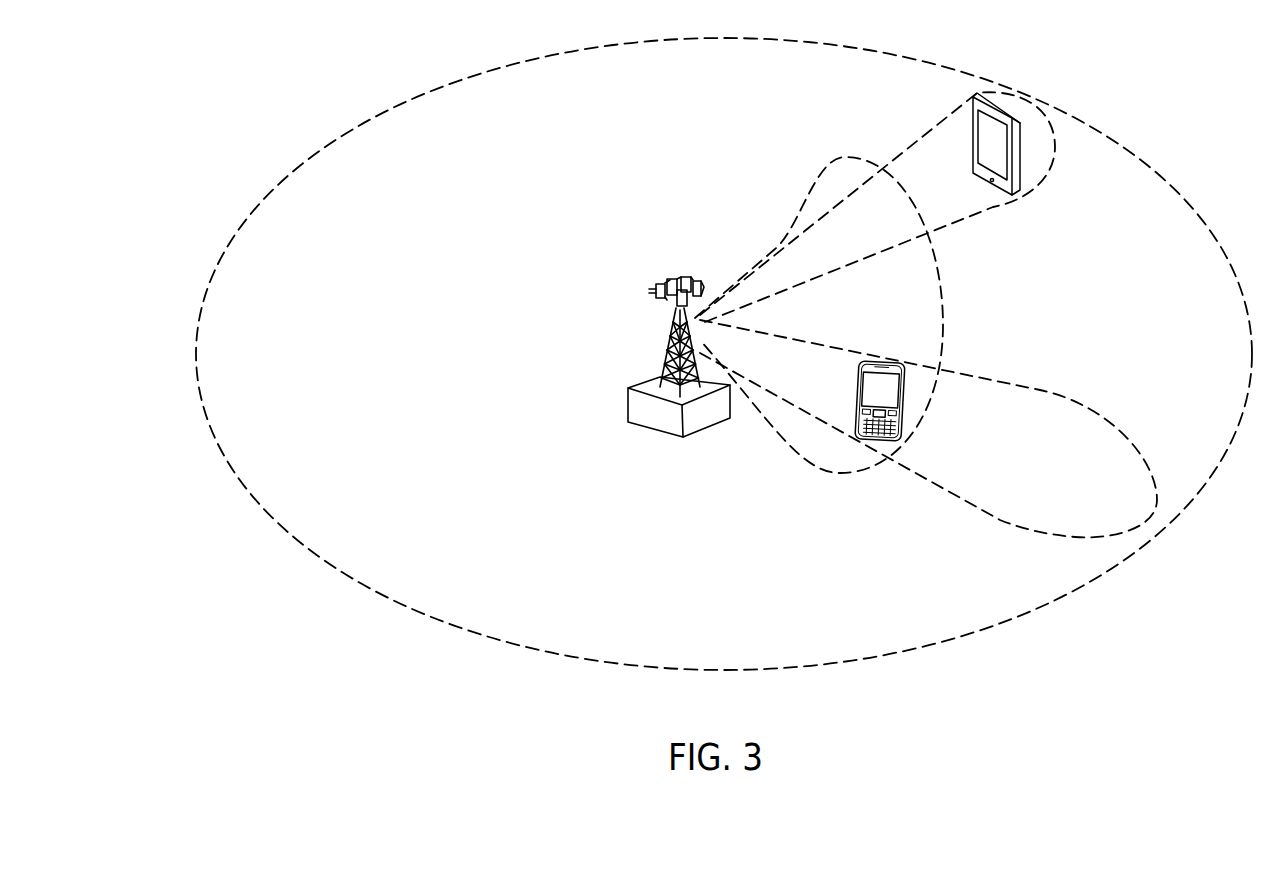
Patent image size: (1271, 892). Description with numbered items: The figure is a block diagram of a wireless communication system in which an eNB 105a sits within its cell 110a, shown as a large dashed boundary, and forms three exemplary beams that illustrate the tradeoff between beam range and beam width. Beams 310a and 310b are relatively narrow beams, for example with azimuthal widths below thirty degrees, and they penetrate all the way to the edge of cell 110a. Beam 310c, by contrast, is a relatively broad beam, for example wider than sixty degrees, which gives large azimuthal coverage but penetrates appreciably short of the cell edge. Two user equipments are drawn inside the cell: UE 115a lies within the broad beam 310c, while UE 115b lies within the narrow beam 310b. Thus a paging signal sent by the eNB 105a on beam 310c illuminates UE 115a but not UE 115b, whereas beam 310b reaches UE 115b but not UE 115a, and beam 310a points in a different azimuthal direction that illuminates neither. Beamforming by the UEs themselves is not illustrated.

The eNB 105a is at (667, 434).
The cell 110a is at (372, 118).
The UE 115a is at (855, 395).
The UE 115b is at (1020, 168).
The beam 310a is at (1043, 393).
The beam 310b is at (993, 207).
The beam 310c is at (948, 313).